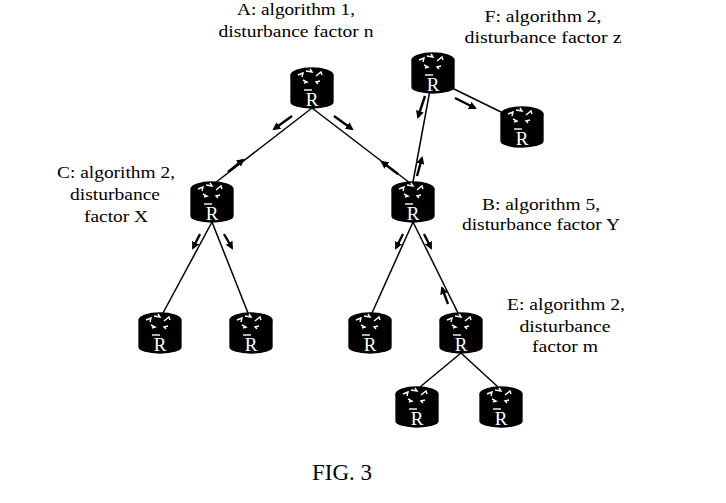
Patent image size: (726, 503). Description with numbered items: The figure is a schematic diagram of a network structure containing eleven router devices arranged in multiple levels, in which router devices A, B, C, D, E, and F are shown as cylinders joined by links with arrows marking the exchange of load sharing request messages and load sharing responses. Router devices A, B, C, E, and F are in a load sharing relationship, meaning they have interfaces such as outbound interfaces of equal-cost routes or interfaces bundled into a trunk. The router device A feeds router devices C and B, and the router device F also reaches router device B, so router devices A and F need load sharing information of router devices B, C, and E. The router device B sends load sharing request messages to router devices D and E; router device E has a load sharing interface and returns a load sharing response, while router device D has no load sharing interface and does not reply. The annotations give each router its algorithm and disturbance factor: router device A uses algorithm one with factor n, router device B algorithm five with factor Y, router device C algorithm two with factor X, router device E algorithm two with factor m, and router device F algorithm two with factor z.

The router device A is at (322, 89).
The router device B is at (422, 203).
The router device C is at (222, 203).
The router device D is at (357, 334).
The router device E is at (470, 334).
The router device F is at (442, 74).